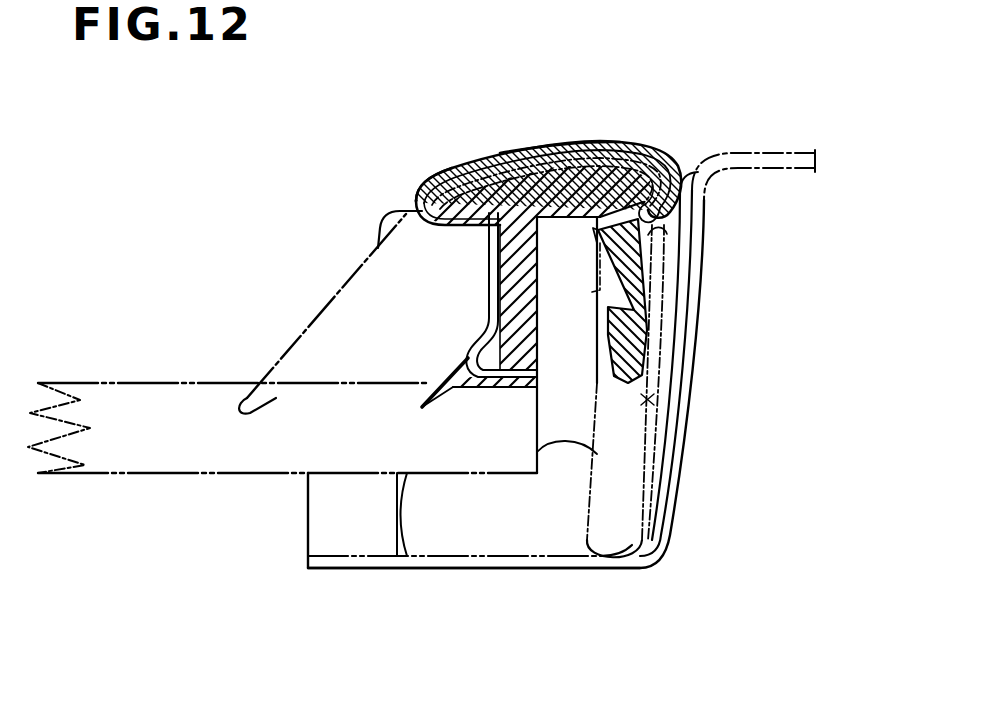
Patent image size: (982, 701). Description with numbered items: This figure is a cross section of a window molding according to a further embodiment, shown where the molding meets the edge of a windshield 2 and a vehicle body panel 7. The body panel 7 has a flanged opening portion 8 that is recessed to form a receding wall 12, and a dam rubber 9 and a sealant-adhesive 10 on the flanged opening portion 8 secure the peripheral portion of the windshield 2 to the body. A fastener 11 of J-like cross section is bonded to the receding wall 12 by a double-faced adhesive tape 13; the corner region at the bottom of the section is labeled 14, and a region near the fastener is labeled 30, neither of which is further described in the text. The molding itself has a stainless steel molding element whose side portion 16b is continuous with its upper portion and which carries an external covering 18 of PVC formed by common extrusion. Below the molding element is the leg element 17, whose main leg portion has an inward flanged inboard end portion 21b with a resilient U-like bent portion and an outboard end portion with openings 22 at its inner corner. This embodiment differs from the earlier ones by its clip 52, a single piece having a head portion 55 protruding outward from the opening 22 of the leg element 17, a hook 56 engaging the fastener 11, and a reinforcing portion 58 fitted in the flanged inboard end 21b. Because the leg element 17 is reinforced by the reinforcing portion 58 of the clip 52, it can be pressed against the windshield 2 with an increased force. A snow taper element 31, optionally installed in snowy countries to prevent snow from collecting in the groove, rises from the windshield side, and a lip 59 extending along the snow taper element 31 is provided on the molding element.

The windshield 2 is at (132, 383).
The vehicle body panel 7 is at (794, 150).
The flanged opening portion 8 is at (343, 566).
The dam rubber 9 is at (312, 522).
The sealant-adhesive 10 is at (482, 556).
The fastener 11 is at (648, 400).
The receding wall 12 is at (692, 368).
The double-faced adhesive tape 13 is at (676, 286).
The bottom corner 14 is at (614, 556).
The side portion 16b is at (545, 153).
The leg element 17 is at (490, 308).
The external covering 18 is at (580, 153).
The inboard end portion 21b is at (537, 384).
The opening 22 is at (487, 168).
The engaging portion 30 is at (655, 236).
The snow taper element 31 is at (284, 356).
The clip 52 is at (607, 148).
The head portion 55 is at (443, 172).
The hook 56 is at (652, 322).
The reinforcing portion 58 is at (527, 272).
The lip 59 is at (378, 244).